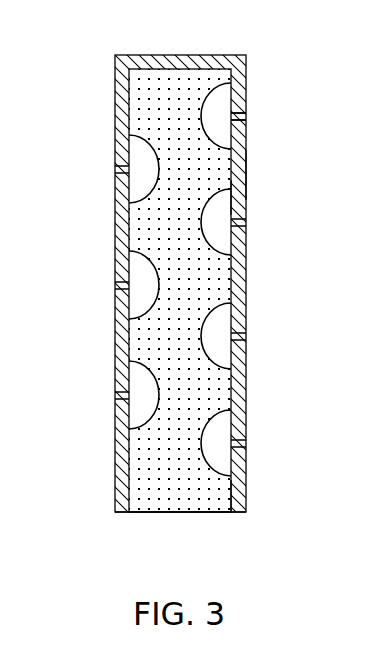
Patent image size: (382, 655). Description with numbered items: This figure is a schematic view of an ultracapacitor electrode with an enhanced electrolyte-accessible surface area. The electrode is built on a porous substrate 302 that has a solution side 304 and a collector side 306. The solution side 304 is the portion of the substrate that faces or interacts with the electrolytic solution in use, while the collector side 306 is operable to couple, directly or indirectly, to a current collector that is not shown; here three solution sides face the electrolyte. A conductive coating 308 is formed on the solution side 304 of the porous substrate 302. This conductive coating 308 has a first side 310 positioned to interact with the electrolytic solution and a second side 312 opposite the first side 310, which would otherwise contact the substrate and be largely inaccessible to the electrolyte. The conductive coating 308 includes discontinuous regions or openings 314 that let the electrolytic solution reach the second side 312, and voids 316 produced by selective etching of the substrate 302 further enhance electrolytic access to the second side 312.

The porous substrate 302 is at (168, 365).
The solution side 304 is at (197, 69).
The collector side 306 is at (155, 513).
The conductive coating 308 is at (246, 175).
The first side 310 is at (246, 205).
The second side 312 is at (233, 493).
The openings 314 is at (246, 113).
The voids 316 is at (222, 118).